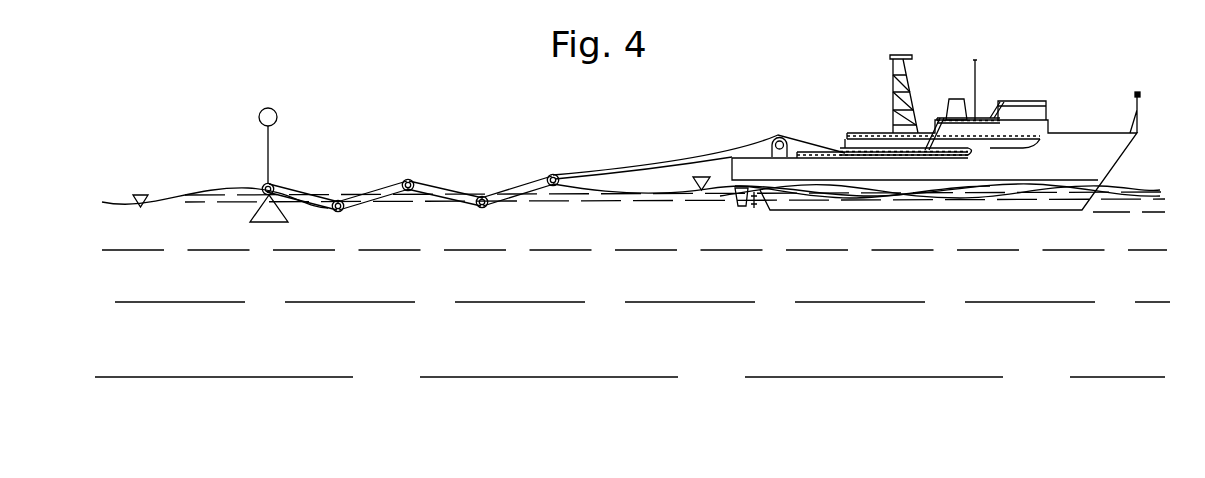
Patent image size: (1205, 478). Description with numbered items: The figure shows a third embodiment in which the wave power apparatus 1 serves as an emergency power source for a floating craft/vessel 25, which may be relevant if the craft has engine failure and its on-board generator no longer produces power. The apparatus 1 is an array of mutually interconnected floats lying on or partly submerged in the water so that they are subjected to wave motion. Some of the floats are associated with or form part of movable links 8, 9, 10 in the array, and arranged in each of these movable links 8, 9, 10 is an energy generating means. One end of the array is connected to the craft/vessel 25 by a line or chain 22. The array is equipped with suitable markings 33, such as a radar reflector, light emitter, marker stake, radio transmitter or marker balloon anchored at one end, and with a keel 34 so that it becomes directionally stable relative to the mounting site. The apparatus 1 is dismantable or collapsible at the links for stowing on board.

The wave power apparatus 1 is at (433, 165).
The movable link 8 is at (504, 221).
The movable link 9 is at (419, 207).
The movable link 10 is at (333, 230).
The line or chain 22 is at (713, 155).
The floating craft/vessel 25 is at (880, 143).
The markings 33 is at (262, 111).
The keel 34 is at (260, 213).